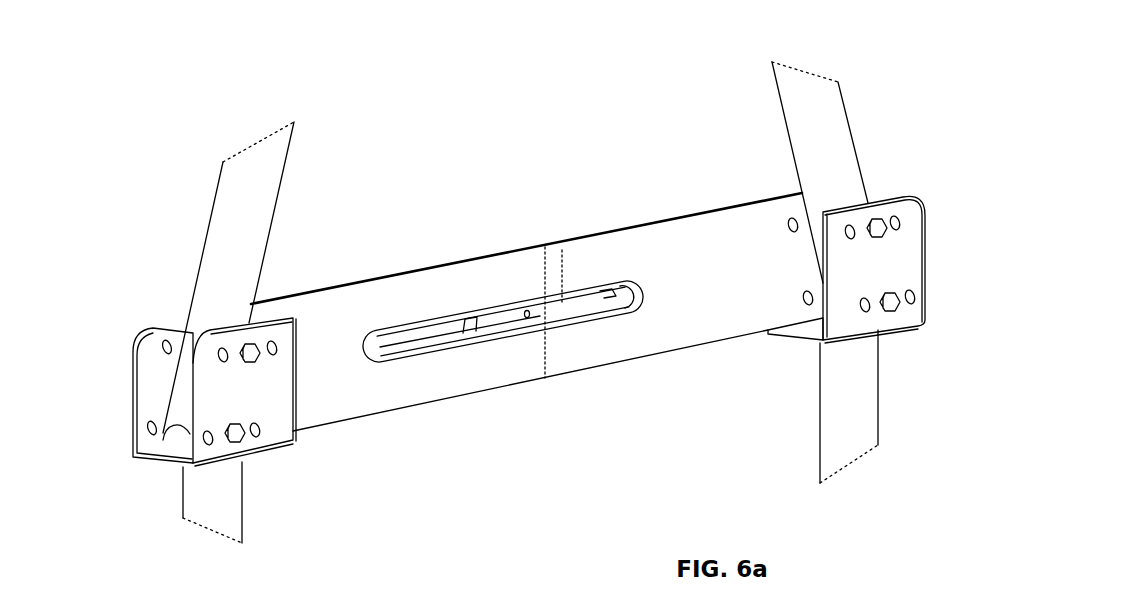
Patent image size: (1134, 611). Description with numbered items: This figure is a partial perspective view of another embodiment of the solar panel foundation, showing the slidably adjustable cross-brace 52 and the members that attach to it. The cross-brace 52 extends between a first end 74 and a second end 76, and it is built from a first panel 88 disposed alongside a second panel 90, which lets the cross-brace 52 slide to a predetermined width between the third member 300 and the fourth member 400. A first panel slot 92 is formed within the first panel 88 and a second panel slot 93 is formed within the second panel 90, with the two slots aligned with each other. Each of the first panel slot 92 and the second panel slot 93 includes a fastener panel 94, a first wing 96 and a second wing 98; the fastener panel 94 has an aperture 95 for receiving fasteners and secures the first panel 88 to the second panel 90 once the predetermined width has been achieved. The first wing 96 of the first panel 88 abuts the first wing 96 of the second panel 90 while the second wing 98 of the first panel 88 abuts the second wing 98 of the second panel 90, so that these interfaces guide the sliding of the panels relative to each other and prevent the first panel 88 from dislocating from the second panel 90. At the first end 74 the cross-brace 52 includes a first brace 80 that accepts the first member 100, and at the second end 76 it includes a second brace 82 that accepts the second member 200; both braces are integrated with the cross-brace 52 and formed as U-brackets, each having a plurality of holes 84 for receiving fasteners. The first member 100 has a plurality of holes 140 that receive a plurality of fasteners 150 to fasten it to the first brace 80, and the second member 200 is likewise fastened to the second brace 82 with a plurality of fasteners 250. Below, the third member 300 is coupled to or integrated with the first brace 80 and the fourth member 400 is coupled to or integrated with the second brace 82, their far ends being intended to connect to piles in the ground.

The cross-brace 52 is at (604, 439).
The first end of the cross-brace 74 is at (154, 284).
The second end of the cross-brace 76 is at (927, 351).
The first brace 80 is at (238, 397).
The second brace 82 is at (862, 279).
The plurality of holes 84 is at (150, 427).
The first panel 88 is at (318, 297).
The second panel 90 is at (748, 217).
The first panel slot 92 is at (388, 345).
The second panel slot 93 is at (625, 295).
The fastener panel 94 is at (453, 327).
The aperture 95 is at (527, 313).
The first wing 96 is at (558, 317).
The second wing 98 is at (590, 290).
The first member 100 is at (225, 228).
The plurality of holes 140 is at (220, 357).
The plurality of fasteners 150 is at (227, 427).
The second member 200 is at (838, 155).
The plurality of fasteners 250 is at (897, 300).
The third member 300 is at (233, 465).
The fourth member 400 is at (840, 398).